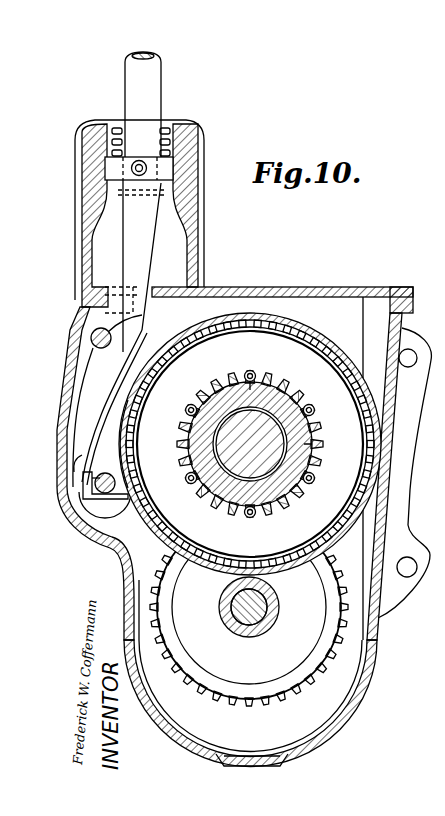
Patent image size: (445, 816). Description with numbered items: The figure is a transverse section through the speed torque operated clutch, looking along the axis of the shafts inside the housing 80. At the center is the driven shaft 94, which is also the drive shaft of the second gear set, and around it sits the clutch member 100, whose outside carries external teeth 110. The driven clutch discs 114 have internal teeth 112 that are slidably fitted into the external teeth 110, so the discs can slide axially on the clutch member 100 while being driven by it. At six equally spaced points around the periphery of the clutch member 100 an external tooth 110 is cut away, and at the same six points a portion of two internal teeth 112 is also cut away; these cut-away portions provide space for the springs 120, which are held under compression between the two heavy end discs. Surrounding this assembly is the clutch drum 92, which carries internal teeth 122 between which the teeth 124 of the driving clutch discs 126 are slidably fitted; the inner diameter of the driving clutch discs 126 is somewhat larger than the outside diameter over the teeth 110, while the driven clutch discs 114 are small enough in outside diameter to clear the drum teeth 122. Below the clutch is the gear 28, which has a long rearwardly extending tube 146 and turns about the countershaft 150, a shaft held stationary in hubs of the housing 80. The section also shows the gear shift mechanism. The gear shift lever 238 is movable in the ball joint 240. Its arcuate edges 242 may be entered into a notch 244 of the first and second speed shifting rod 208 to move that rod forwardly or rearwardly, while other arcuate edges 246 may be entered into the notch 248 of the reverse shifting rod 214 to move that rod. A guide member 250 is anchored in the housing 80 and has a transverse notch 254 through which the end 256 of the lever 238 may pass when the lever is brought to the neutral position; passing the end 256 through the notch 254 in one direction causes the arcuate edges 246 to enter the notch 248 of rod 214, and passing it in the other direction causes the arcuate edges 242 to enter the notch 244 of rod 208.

The gear 28 is at (328, 566).
The housing 80 is at (374, 632).
The clutch drum 92 is at (305, 322).
The driven shaft 94 is at (305, 435).
The clutch member 100 is at (306, 447).
The external teeth 110 is at (284, 383).
The internal teeth 112 is at (281, 376).
The driven clutch discs 114 is at (318, 337).
The springs 120 is at (249, 370).
The internal teeth 122 is at (320, 327).
The teeth 124 is at (332, 360).
The driving clutch discs 126 is at (360, 379).
The tube 146 is at (226, 612).
The countershaft 150 is at (270, 604).
The first and second speed shifting rod 208 is at (96, 332).
The reverse shifting rod 214 is at (136, 481).
The gear shift lever 238 is at (140, 233).
The ball joint 240 is at (163, 186).
The arcuate edges 242 is at (130, 346).
The notch 244 is at (143, 330).
The arcuate edges 246 is at (84, 457).
The notch 248 is at (103, 473).
The guide member 250 is at (107, 510).
The transverse notch 254 is at (90, 505).
The end 256 is at (82, 498).